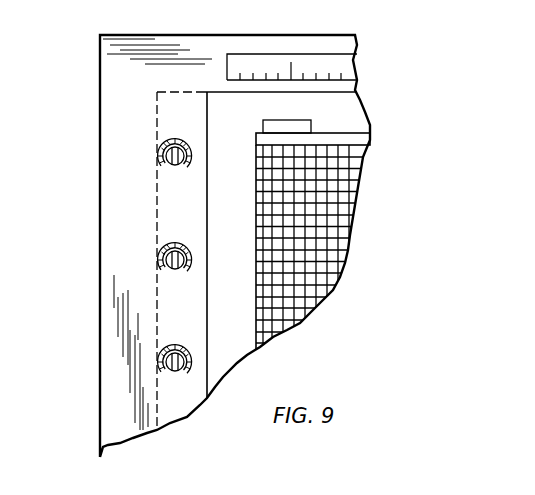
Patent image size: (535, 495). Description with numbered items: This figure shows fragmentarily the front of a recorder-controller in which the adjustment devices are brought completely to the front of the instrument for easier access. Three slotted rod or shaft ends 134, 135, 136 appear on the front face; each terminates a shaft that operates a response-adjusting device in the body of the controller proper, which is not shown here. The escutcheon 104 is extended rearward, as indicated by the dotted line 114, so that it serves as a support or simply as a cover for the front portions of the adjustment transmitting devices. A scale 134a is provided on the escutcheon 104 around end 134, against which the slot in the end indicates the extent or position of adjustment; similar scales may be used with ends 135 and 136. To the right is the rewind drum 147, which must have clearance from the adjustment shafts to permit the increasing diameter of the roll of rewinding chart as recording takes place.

The escutcheon 104 is at (118, 194).
The dotted line 114 is at (157, 208).
The slotted rod or shaft end 134 is at (172, 170).
The scale 134a is at (160, 146).
The slotted rod or shaft end 135 is at (168, 273).
The slotted rod or shaft end 136 is at (165, 375).
The rewind drum 147 is at (315, 125).